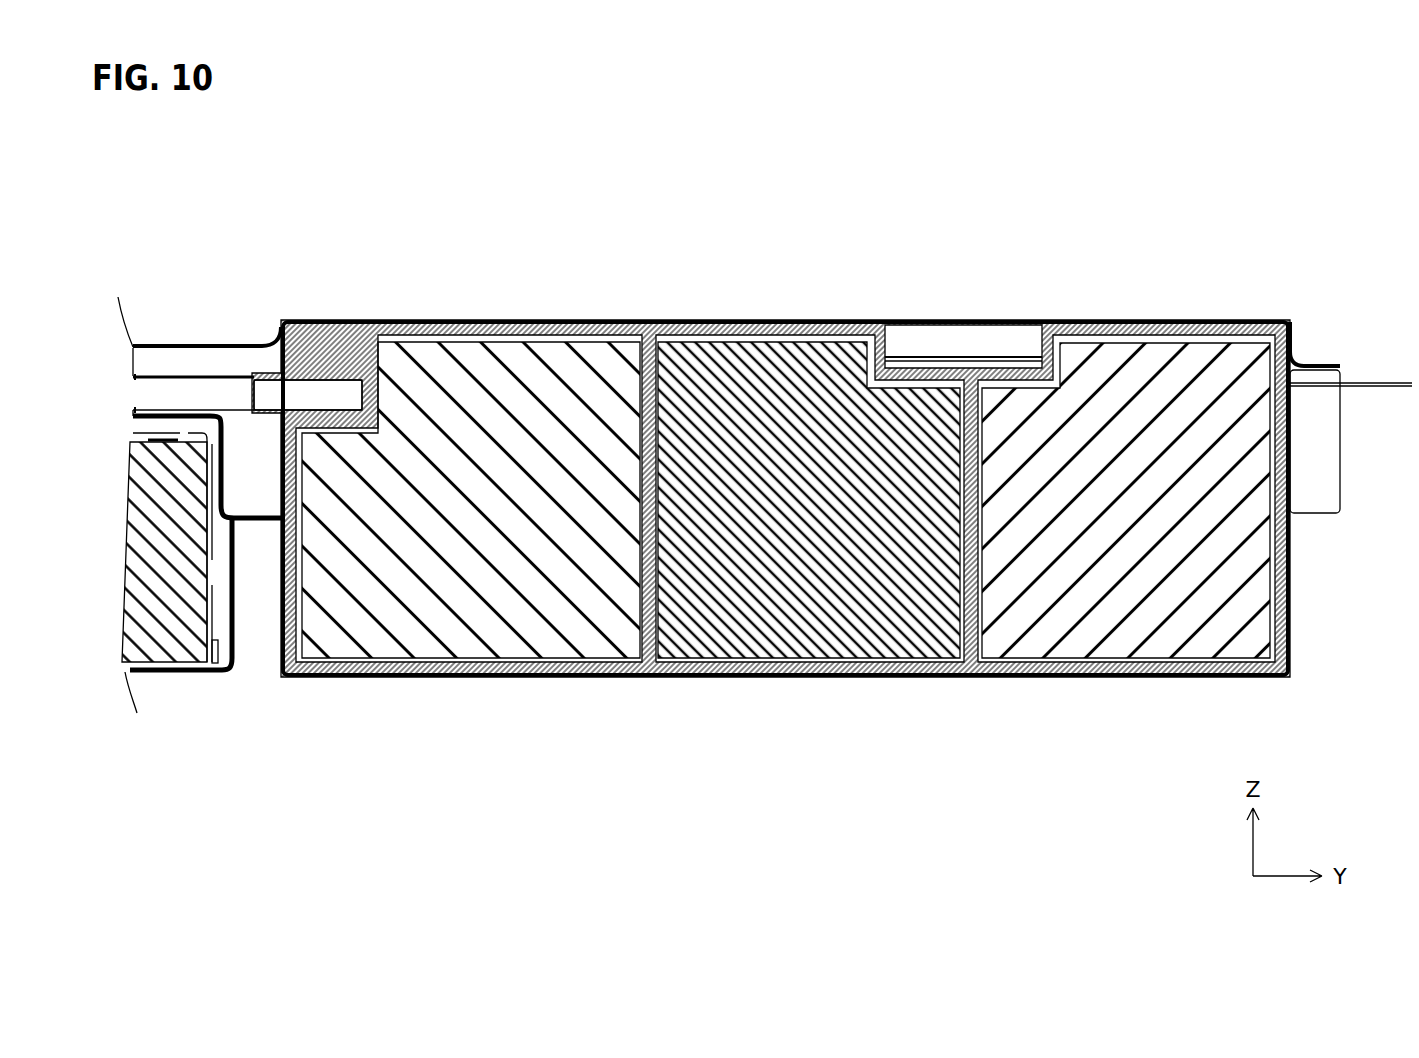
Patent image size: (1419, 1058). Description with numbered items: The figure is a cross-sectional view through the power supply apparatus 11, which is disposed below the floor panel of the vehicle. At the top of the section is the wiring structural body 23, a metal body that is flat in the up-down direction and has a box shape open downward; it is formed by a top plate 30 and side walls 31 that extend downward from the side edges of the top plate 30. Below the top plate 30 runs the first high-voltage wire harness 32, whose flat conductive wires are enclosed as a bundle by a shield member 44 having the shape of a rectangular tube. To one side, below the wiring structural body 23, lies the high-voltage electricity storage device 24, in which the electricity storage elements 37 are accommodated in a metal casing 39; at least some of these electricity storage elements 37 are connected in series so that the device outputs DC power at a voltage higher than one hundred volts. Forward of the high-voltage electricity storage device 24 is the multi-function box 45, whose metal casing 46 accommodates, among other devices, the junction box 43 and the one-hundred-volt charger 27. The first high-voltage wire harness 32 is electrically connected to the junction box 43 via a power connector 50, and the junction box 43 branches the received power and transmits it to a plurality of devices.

The power supply apparatus 11 is at (1312, 284).
The wiring structural body 23 is at (206, 439).
The high-voltage electricity storage device 24 is at (182, 611).
The 100-V charger 27 is at (1140, 380).
The top plate 30 is at (195, 344).
The side walls 31 is at (233, 360).
The first high-voltage wire harness 32 is at (147, 347).
The electricity storage elements 37 is at (163, 632).
The metal casing 39 is at (150, 743).
The junction box 43 is at (485, 370).
The shield member 44 is at (157, 390).
The multi-function box 45 is at (537, 663).
The casing 46 is at (418, 676).
The power connector 50 is at (267, 390).